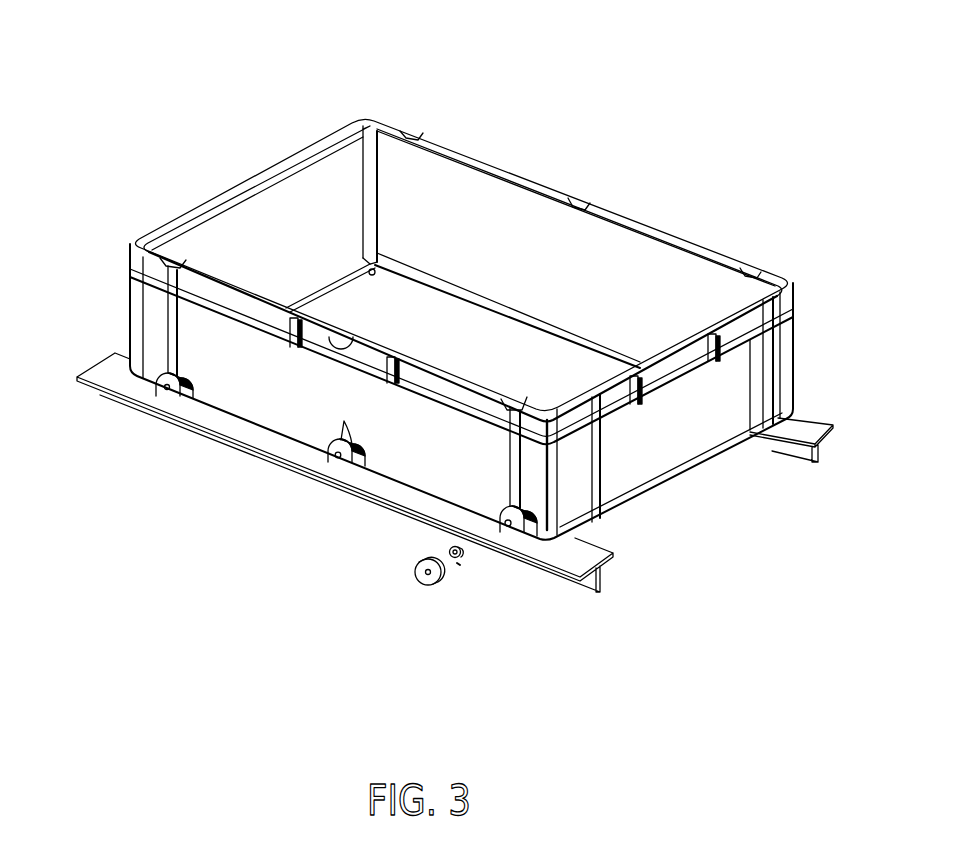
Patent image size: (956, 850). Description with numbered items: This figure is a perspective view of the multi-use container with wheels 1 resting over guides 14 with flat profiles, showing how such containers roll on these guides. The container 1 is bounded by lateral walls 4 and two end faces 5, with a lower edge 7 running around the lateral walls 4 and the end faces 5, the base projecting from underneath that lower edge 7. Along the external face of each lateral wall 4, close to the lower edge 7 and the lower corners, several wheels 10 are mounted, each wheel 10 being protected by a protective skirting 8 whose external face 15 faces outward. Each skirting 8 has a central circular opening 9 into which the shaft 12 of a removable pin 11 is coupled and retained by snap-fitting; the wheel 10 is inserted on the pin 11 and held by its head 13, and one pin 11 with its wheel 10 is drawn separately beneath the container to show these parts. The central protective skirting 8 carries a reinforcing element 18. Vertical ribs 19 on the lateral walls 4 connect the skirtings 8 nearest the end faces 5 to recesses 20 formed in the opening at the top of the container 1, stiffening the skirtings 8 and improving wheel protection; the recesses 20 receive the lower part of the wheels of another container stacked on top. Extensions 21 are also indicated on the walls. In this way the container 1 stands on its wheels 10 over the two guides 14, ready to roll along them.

The multi-use container with wheels 1 is at (284, 108).
The lateral wall 4 is at (250, 378).
The end face 5 is at (657, 449).
The lower edge 7 is at (240, 422).
The protective skirting 8 is at (330, 455).
The central circular opening 9 is at (337, 459).
The wheel 10 is at (339, 460).
The removable pin 11 is at (460, 572).
The shaft 12 is at (452, 560).
The head 13 is at (463, 556).
The guide 14 is at (599, 595).
The external face of the protective skirting 15 is at (519, 548).
The reinforcing element 18 is at (320, 440).
The vertical rib 19 is at (165, 332).
The recess 20 is at (165, 262).
The extension 21 is at (643, 388).